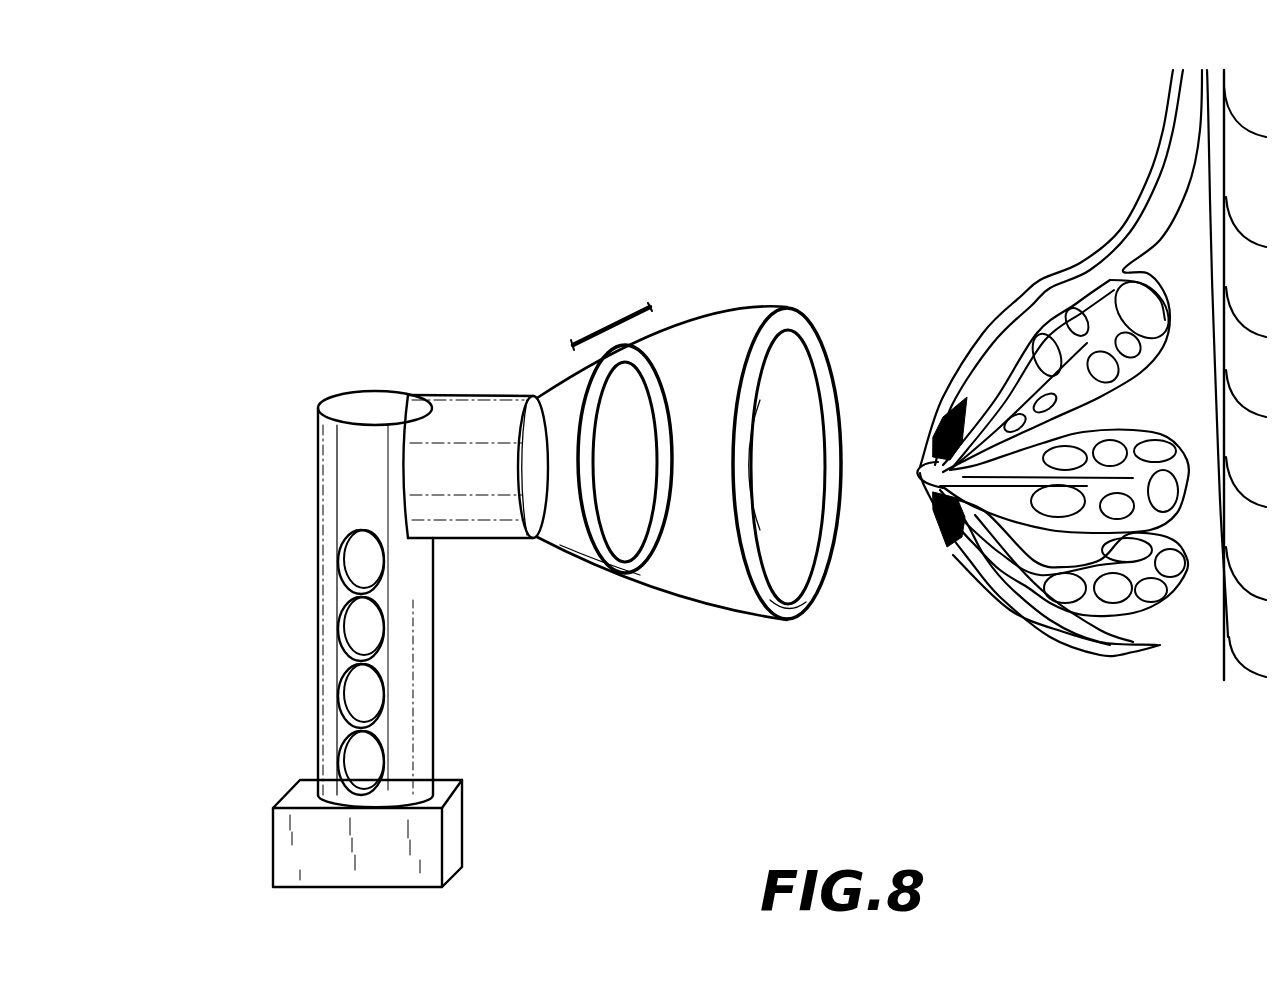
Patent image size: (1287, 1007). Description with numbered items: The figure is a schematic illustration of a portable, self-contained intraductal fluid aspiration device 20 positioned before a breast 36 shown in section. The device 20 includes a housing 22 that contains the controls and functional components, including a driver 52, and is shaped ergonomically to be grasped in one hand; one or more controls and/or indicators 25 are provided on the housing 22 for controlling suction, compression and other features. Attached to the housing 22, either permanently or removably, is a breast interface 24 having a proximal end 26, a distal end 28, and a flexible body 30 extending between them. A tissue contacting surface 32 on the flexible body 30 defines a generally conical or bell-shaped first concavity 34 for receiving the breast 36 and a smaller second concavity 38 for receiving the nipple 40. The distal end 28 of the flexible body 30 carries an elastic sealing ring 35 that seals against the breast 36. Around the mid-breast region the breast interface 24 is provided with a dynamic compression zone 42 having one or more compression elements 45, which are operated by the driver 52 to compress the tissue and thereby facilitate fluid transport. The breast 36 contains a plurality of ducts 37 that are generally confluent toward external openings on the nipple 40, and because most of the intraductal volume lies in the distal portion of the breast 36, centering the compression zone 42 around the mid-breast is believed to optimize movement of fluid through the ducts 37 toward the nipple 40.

The intraductal fluid aspiration device 20 is at (327, 283).
The housing 22 is at (327, 502).
The controls and/or indicators 25 is at (355, 565).
The driver 52 is at (486, 371).
The breast interface 24 is at (718, 303).
The proximal end 26 is at (558, 378).
The dynamic compression zone 42 is at (613, 317).
The distal end 28 is at (762, 613).
The tissue contacting surface 32 is at (803, 340).
The first concavity 34 is at (800, 448).
The elastic sealing ring 35 is at (807, 602).
The flexible body 30 is at (700, 585).
The compression elements 45 is at (608, 573).
The second concavity 38 is at (531, 470).
The breast 36 is at (1083, 307).
The nipple 40 is at (925, 470).
The ducts 37 is at (953, 553).